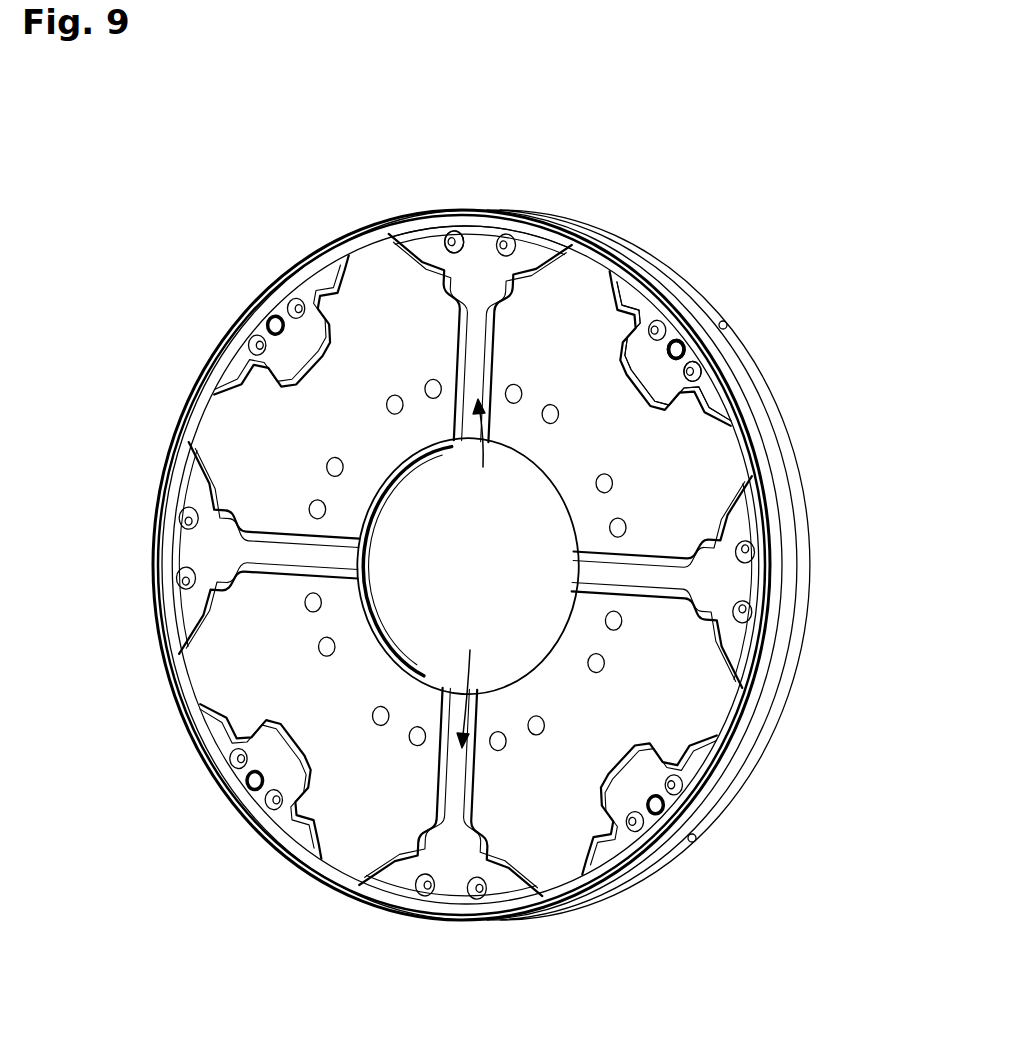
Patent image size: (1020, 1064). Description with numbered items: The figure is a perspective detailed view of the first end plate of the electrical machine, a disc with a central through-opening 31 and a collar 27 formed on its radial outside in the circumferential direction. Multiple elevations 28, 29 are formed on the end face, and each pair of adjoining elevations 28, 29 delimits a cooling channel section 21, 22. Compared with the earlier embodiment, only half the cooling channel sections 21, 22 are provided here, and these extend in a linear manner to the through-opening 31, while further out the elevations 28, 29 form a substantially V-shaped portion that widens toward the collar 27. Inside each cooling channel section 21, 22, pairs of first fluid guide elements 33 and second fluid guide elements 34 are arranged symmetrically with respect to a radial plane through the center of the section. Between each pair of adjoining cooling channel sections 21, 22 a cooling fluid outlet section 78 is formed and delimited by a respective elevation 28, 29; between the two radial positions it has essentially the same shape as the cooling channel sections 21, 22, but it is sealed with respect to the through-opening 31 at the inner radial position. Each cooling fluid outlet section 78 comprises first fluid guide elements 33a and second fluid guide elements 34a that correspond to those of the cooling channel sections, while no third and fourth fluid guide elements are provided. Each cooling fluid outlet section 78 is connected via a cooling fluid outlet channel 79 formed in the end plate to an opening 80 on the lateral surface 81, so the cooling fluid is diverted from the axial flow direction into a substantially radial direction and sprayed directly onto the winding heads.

The cooling channel section 21 is at (480, 450).
The cooling channel section 22 is at (472, 686).
The collar 27 is at (400, 255).
The elevation 28 is at (585, 278).
The elevation 29 is at (380, 278).
The through-opening 31 is at (430, 582).
The first fluid guide element 33 is at (432, 266).
The second fluid guide element 34 is at (457, 240).
The first fluid guide element 33a is at (688, 417).
The second fluid guide element 34a is at (700, 372).
The cooling fluid outlet section 78 is at (655, 376).
The cooling fluid outlet channel 79 is at (688, 338).
The opening 80 is at (727, 325).
The lateral surface 81 is at (770, 415).